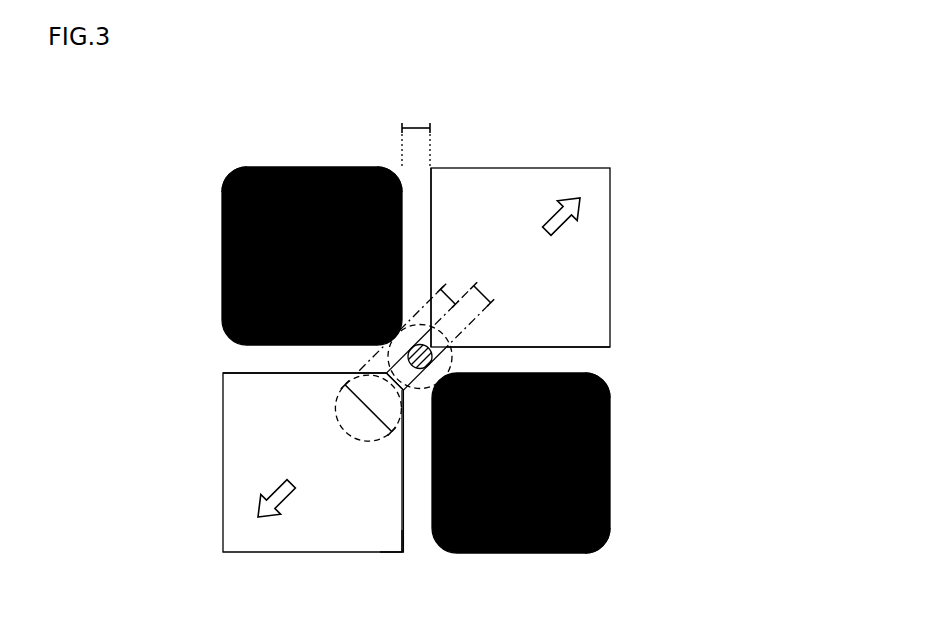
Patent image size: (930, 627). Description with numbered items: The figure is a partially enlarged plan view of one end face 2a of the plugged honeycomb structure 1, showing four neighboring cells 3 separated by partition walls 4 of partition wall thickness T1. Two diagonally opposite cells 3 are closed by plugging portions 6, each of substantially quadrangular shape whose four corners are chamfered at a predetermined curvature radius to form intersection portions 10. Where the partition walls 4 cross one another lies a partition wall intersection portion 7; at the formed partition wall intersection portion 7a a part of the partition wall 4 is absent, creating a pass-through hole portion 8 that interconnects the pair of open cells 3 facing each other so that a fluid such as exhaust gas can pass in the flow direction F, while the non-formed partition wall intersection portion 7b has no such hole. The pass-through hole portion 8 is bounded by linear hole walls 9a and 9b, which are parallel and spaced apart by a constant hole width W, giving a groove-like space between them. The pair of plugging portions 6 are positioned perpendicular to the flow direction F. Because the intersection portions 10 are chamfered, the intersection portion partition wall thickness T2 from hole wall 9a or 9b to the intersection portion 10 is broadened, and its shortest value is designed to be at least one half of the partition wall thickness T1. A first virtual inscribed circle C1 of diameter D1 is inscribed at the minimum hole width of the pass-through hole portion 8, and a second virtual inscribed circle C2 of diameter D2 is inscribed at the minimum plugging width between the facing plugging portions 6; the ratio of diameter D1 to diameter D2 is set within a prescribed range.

The plugged honeycomb structure 1 is at (450, 359).
The one end face 2a is at (406, 359).
The cell 3 is at (408, 385).
The partition wall 4 is at (424, 208).
The plugging portion 6 is at (195, 262).
The partition wall intersection portion 7 is at (317, 487).
The formed partition wall intersection portion 7a is at (337, 437).
The non-formed partition wall intersection portion 7b is at (411, 553).
The pass-through hole portion 8 is at (399, 360).
The hole wall 9a is at (436, 360).
The hole wall 9b is at (385, 363).
The intersection portion 10 is at (228, 168).
The partition wall thickness T1 is at (410, 126).
The intersection portion partition wall thickness T2 is at (446, 286).
The hole width W is at (482, 314).
The diameter of first virtual inscribed circle D1 is at (422, 358).
The diameter of second virtual inscribed circle D2 is at (367, 413).
The first virtual inscribed circle C1 is at (473, 338).
The second virtual inscribed circle C2 is at (345, 397).
The flow direction F is at (552, 218).